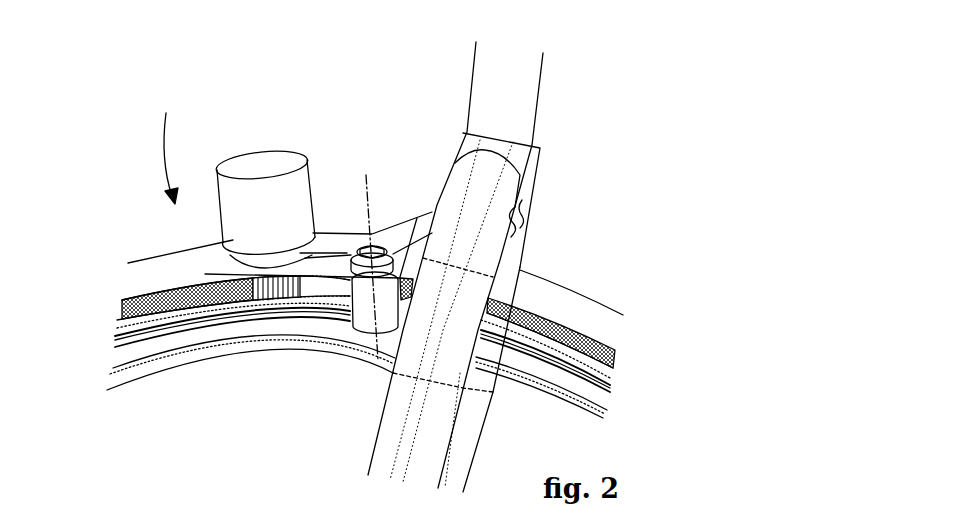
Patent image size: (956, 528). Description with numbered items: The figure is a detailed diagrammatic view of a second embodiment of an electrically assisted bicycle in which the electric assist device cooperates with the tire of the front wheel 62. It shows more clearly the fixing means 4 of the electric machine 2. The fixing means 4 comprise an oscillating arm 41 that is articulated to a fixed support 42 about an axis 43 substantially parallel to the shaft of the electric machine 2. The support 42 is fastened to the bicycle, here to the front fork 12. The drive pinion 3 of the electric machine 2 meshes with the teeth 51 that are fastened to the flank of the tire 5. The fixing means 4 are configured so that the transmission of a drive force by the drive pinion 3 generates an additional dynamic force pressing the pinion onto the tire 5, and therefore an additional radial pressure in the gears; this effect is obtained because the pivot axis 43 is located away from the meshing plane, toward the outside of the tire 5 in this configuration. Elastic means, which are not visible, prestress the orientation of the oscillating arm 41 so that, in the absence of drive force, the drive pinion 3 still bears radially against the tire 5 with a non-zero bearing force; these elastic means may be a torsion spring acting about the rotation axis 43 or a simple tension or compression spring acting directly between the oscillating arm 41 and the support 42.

The electric machine 2 is at (263, 163).
The drive pinion 3 is at (278, 300).
The fixing means 4 is at (400, 102).
The tire 5 is at (143, 262).
The front fork 12 is at (500, 182).
The oscillating arm 41 is at (331, 262).
The fixed support 42 is at (423, 213).
The axis 43 is at (364, 170).
The teeth 51 is at (197, 297).
The front wheel 62 is at (168, 148).